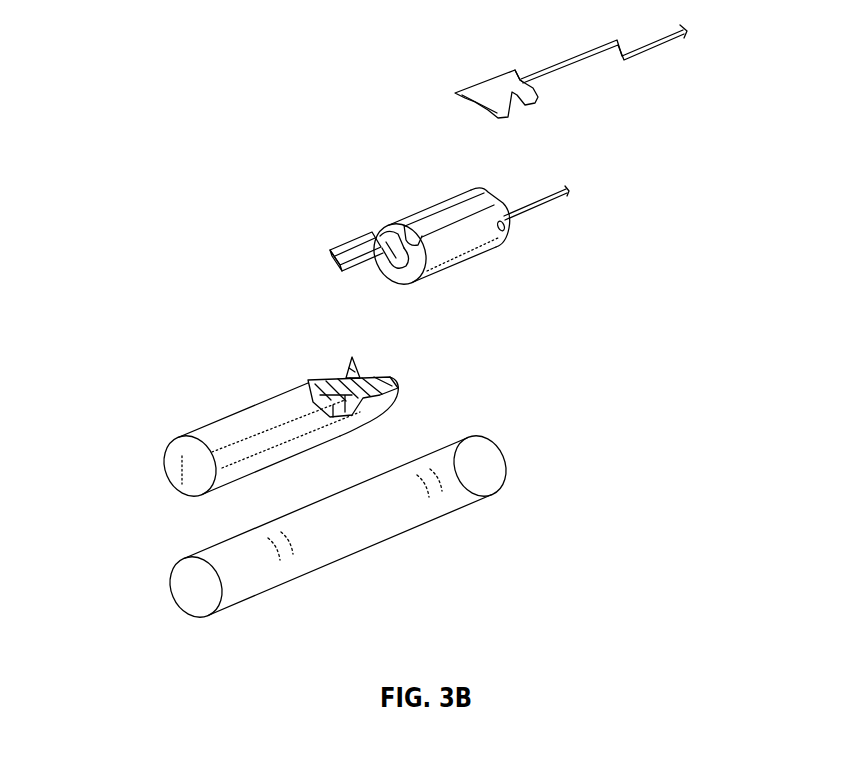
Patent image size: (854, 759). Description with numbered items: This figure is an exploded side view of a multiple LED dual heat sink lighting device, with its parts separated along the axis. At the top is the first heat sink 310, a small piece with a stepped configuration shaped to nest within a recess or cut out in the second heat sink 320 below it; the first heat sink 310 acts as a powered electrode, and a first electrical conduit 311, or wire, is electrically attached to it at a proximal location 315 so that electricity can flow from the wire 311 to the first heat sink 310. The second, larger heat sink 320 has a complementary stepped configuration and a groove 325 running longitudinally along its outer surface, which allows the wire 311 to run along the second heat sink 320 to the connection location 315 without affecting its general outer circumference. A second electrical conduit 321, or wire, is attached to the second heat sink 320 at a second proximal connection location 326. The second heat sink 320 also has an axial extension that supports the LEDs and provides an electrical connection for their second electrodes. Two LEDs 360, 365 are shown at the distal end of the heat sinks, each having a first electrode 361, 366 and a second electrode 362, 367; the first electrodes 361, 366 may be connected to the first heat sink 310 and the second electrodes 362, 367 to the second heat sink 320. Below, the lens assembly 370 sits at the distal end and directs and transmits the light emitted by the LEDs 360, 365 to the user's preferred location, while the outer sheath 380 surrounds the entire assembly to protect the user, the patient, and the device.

The first heat sink 310 is at (490, 82).
The first electrical conduit 311 is at (578, 67).
The proximal location 315 is at (522, 78).
The second heat sink 320 is at (495, 230).
The second electrical conduit 321 is at (537, 200).
The groove 325 is at (452, 211).
The second proximal connection location 326 is at (510, 228).
The LED 360 is at (348, 277).
The first electrode 361 is at (353, 253).
The second electrode 362 is at (378, 273).
The LED 365 is at (397, 282).
The first electrode 366 is at (385, 227).
The second electrode 367 is at (405, 258).
The lens assembly 370 is at (168, 464).
The outer sheath 380 is at (370, 535).